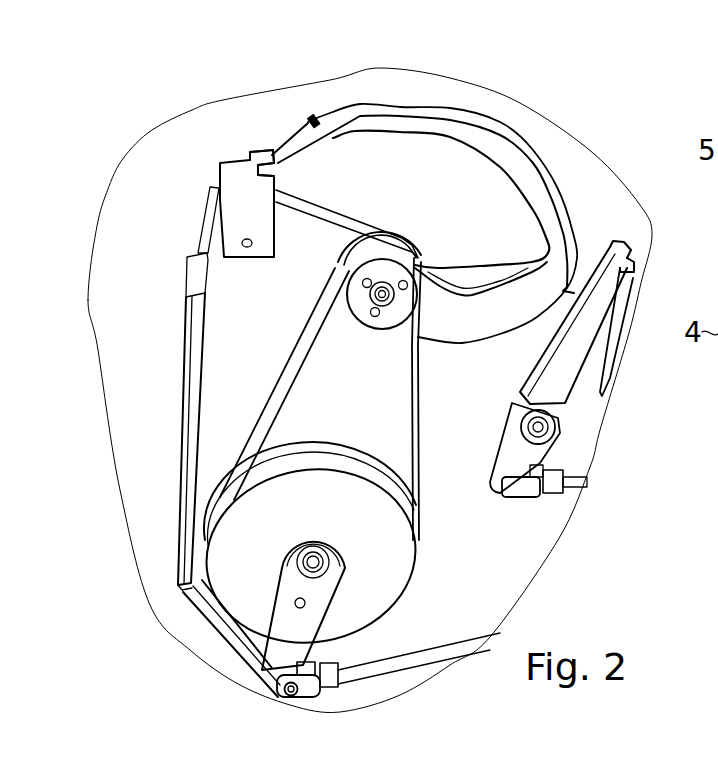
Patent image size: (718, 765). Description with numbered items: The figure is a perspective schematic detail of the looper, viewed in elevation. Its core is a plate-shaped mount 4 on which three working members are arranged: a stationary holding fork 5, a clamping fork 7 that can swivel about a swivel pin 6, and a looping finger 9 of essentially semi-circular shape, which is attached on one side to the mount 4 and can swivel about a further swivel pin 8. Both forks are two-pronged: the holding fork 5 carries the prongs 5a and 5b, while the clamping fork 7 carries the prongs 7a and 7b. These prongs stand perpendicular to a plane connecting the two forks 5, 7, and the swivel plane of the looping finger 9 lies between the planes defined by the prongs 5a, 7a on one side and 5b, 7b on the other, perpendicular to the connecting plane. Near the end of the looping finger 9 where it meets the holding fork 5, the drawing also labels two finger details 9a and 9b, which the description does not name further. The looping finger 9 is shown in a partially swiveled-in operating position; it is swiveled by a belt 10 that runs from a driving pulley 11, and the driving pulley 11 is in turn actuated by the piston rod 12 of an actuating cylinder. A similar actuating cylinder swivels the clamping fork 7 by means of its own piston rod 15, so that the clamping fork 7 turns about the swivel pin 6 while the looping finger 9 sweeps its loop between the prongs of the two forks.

The plate-shaped mount 4 is at (215, 383).
The stationary holding fork 5 is at (240, 197).
The prong of holding fork 5a is at (276, 170).
The prong of holding fork 5b is at (268, 155).
The swivel pin 6 is at (548, 430).
The clamping fork 7 is at (570, 390).
The prong of clamping fork 7a is at (640, 262).
The prong of clamping fork 7b is at (622, 244).
The swivel pin 8 is at (383, 300).
The looping finger 9 is at (510, 153).
The ring connecting piece 9a is at (303, 137).
The ring joint 9b is at (316, 116).
The belt 10 is at (415, 398).
The driving pulley 11 is at (400, 565).
The piston rod 12 is at (417, 656).
The piston rod 15 is at (572, 485).